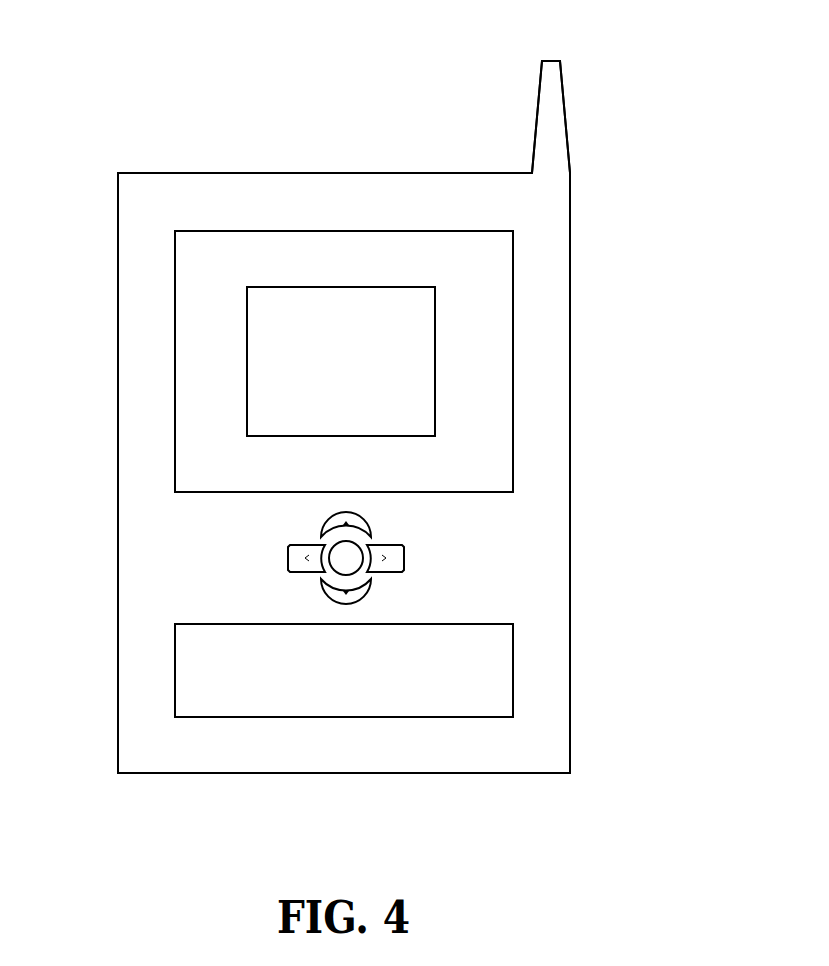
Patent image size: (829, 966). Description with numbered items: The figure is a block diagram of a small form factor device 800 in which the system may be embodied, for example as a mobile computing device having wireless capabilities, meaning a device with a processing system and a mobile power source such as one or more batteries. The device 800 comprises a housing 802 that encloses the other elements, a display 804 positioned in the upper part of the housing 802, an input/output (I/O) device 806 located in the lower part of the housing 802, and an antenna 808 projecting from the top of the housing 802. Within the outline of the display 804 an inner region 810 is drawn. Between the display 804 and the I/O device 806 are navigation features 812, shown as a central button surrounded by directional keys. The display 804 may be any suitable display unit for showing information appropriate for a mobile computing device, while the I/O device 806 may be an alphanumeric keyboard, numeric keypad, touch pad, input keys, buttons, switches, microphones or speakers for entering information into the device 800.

The small form factor device 800 is at (382, 394).
The housing 802 is at (570, 473).
The display 804 is at (513, 250).
The input/output (I/O) device 806 is at (513, 661).
The antenna 808 is at (537, 110).
The display window 810 is at (435, 380).
The navigation features 812 is at (432, 551).